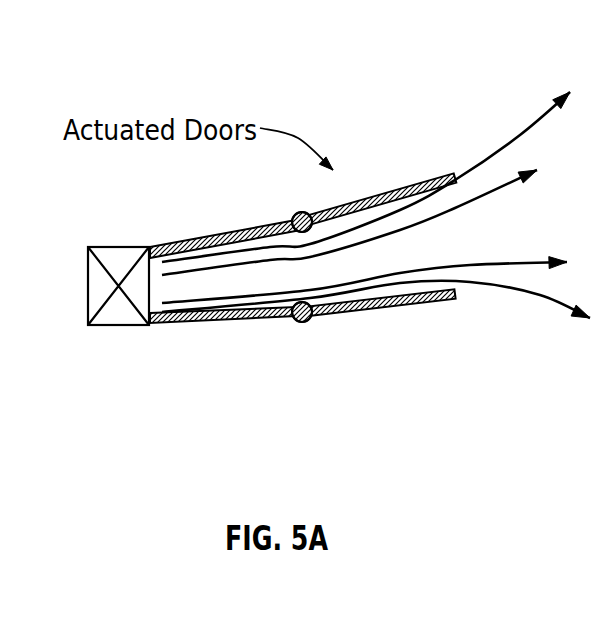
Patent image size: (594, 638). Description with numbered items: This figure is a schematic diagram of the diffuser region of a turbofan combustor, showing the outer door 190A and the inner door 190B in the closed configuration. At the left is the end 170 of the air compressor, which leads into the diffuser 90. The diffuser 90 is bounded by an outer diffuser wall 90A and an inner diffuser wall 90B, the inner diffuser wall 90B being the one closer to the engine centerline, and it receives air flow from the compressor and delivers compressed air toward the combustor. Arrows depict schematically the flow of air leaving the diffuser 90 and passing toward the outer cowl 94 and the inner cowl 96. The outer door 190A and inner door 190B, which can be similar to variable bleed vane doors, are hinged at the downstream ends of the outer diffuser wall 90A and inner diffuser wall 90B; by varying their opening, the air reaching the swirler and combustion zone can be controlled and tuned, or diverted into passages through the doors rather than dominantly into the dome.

The end of air compressor 170 is at (120, 323).
The diffuser 90 is at (223, 294).
The outer diffuser wall 90A is at (228, 232).
The inner diffuser wall 90B is at (247, 323).
The outer door 190A is at (374, 154).
The inner door 190B is at (378, 357).
The outer cowl 94 is at (422, 182).
The inner cowl 96 is at (430, 300).